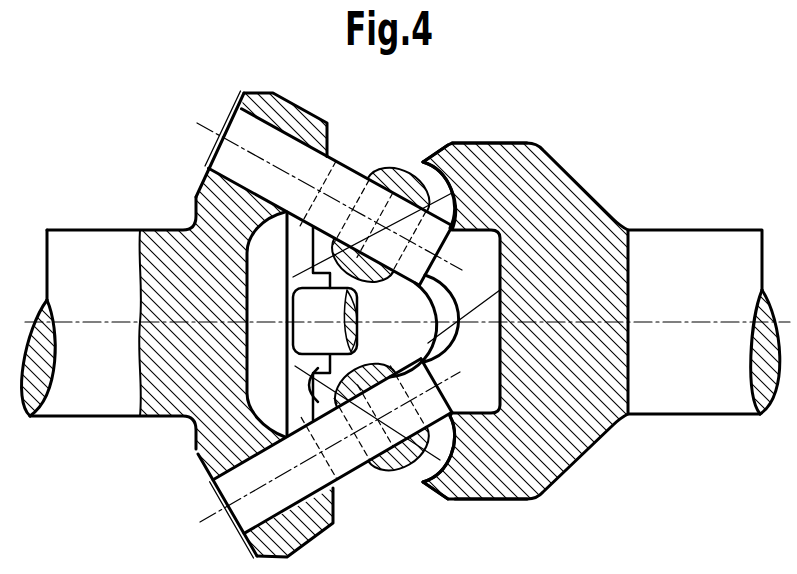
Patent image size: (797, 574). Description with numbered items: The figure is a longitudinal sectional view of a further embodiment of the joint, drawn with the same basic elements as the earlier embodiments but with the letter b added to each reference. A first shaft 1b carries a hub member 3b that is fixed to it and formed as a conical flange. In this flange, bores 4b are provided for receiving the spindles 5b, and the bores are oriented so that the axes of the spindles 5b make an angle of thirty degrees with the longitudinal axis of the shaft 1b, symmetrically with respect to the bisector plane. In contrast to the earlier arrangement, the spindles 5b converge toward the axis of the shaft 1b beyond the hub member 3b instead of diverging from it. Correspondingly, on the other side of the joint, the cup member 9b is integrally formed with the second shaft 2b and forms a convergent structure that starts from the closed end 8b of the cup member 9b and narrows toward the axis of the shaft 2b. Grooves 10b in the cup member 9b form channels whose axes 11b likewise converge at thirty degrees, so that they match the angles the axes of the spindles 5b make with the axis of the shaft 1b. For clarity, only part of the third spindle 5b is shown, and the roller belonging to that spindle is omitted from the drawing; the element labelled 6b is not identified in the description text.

The first shaft 1b is at (72, 408).
The second shaft 2b is at (672, 247).
The hub member 3b is at (248, 104).
The bores 4b is at (268, 124).
The spindles 5b is at (297, 153).
The bushing 6b is at (367, 173).
The closed end 8b is at (572, 207).
The cup member 9b is at (452, 163).
The grooves 10b is at (422, 178).
The axes 11b is at (473, 167).